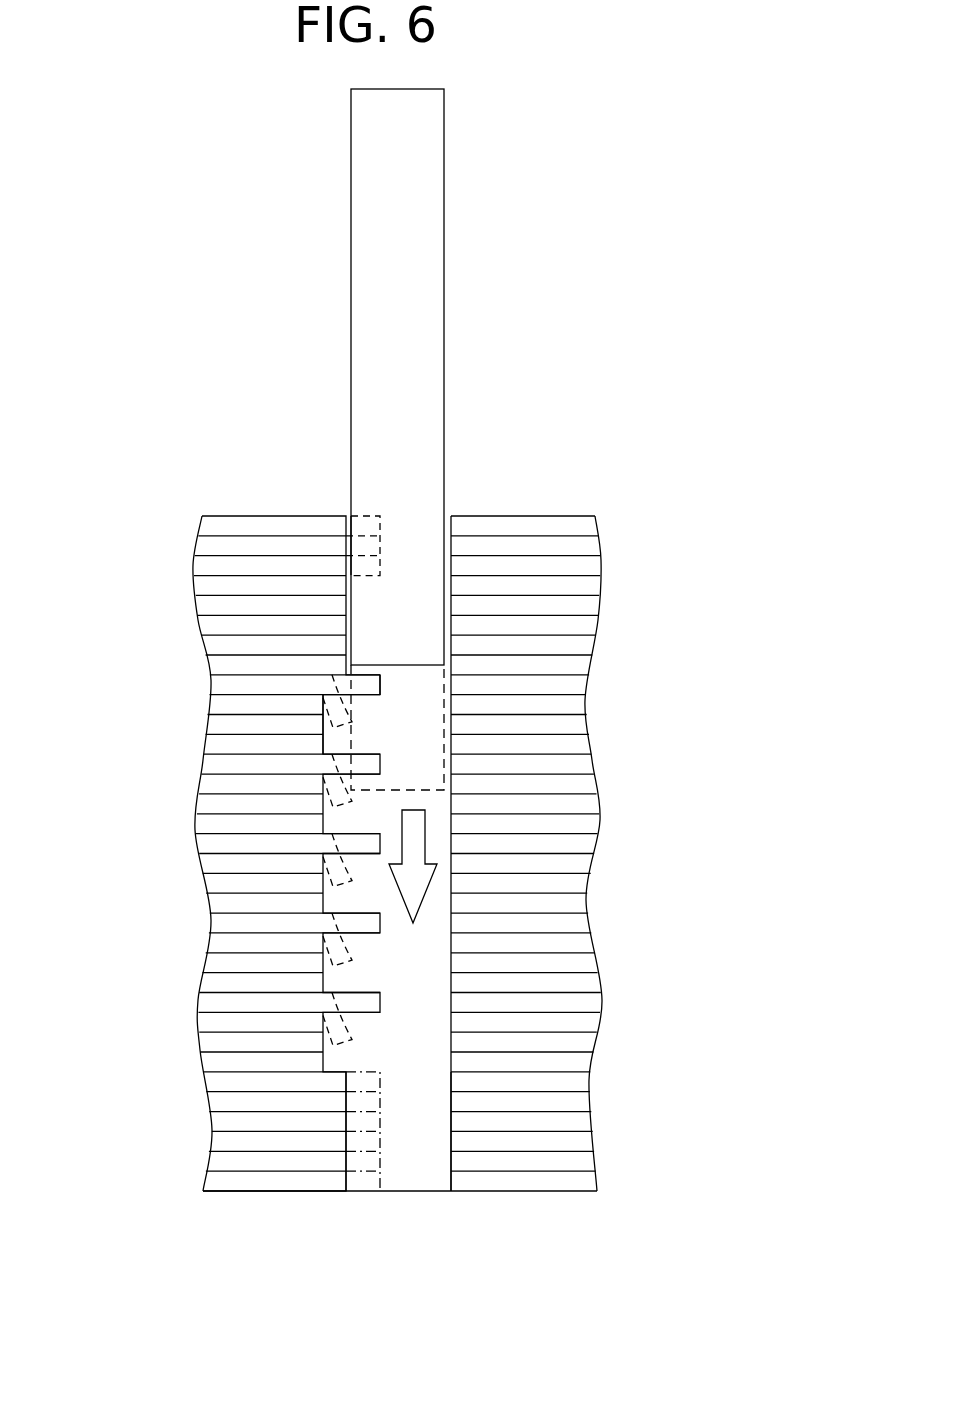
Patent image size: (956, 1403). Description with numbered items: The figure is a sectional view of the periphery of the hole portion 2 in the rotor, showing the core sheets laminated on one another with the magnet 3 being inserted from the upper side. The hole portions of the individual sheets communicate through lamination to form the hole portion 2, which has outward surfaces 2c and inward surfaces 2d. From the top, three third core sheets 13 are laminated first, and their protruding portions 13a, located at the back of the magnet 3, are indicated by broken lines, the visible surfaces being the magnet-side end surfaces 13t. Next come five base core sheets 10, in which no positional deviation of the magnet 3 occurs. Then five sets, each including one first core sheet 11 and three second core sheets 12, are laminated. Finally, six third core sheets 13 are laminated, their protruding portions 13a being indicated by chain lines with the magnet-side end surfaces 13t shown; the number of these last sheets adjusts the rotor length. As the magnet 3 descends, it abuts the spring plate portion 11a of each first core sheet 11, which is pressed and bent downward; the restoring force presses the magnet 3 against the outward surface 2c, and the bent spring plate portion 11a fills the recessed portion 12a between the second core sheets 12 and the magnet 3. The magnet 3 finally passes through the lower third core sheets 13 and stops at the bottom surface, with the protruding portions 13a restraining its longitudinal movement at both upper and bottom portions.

The hole portion 2 is at (467, 1250).
The outward surface 2c is at (451, 1121).
The inward surface 2d is at (347, 1121).
The magnet 3 is at (444, 257).
The base core sheet 10 is at (186, 580).
The first core sheet 11 is at (212, 681).
The spring plate portion 11a is at (380, 683).
The second core sheet 12 is at (190, 698).
The recessed portion 12a is at (323, 746).
The third core sheet 13 is at (186, 518).
The protruding portion 13a is at (368, 516).
The magnet-side end surface 13t is at (351, 516).